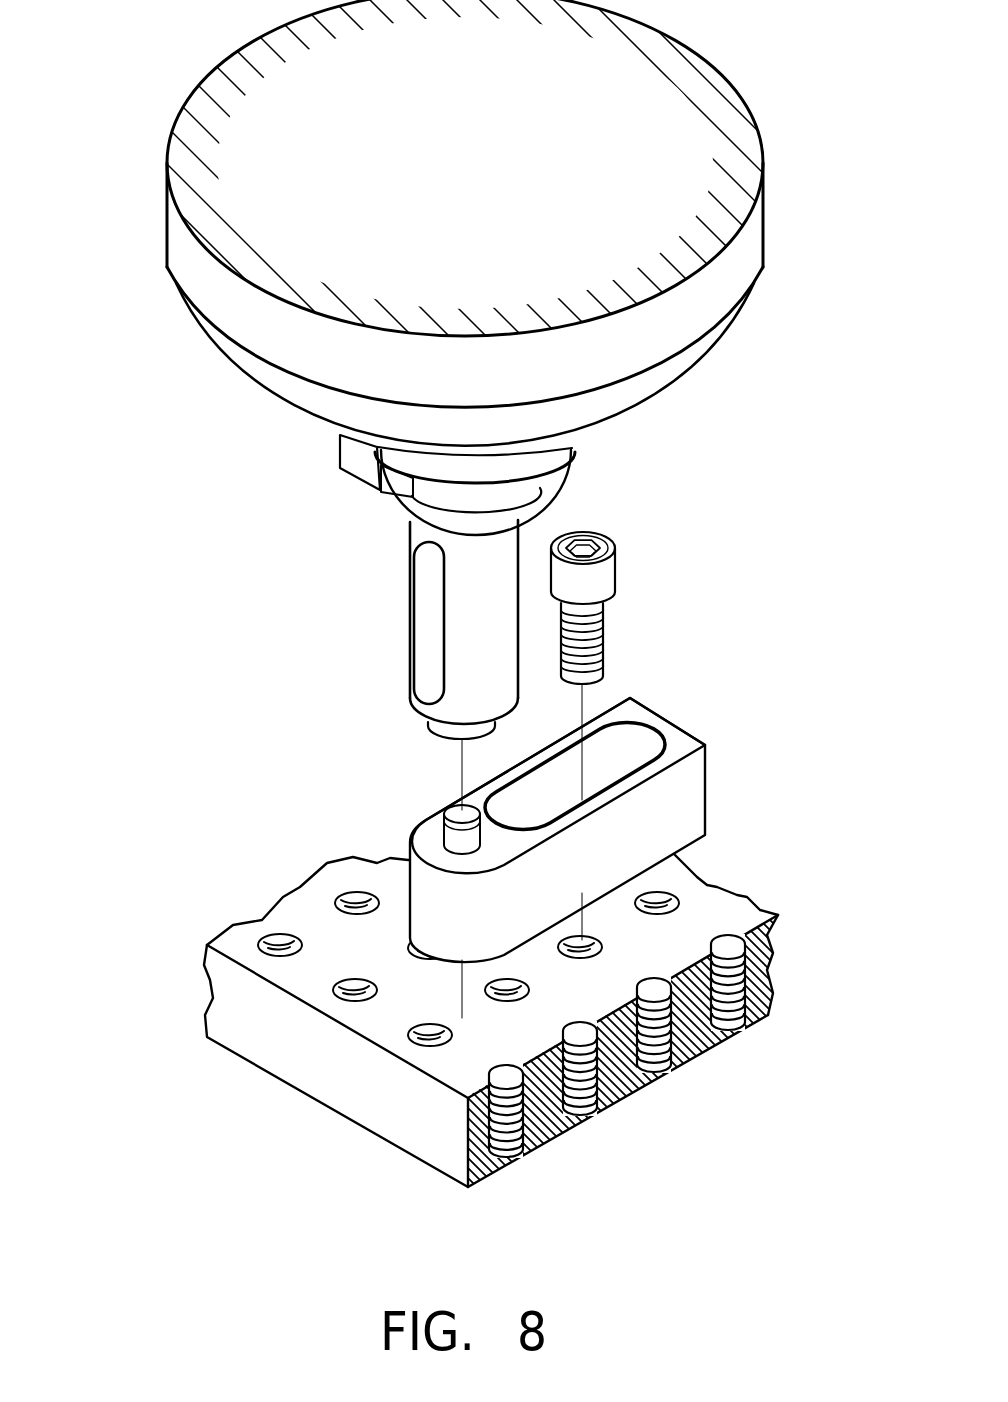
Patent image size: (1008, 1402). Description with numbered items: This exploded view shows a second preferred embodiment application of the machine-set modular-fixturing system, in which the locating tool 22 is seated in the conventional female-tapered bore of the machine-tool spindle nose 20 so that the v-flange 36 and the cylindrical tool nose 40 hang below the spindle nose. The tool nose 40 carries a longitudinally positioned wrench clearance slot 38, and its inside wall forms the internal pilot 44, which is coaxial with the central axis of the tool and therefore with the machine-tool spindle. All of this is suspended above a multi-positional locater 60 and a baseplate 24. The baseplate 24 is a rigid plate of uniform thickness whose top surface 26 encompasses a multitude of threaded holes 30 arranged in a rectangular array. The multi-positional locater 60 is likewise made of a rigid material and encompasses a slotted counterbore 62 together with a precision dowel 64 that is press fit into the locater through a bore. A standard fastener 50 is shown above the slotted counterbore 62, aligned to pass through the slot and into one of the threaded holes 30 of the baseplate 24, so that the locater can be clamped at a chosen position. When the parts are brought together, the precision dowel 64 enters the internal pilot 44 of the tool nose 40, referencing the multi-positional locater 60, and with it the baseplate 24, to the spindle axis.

The machine-tool spindle nose 20 is at (140, 274).
The locating tool 22 is at (385, 557).
The baseplate 24 is at (796, 989).
The top surface of base plate 26 is at (740, 907).
The threaded holes 30 is at (663, 890).
The v-flange 36 is at (507, 485).
The wrench clearance slot 38 is at (430, 646).
The tool nose 40 is at (421, 704).
The internal pilot 44 is at (458, 740).
The fastener 50 is at (605, 578).
The multi-positional locater 60 is at (731, 766).
The slotted counterbore 62 is at (642, 737).
The precision dowel 64 is at (418, 823).